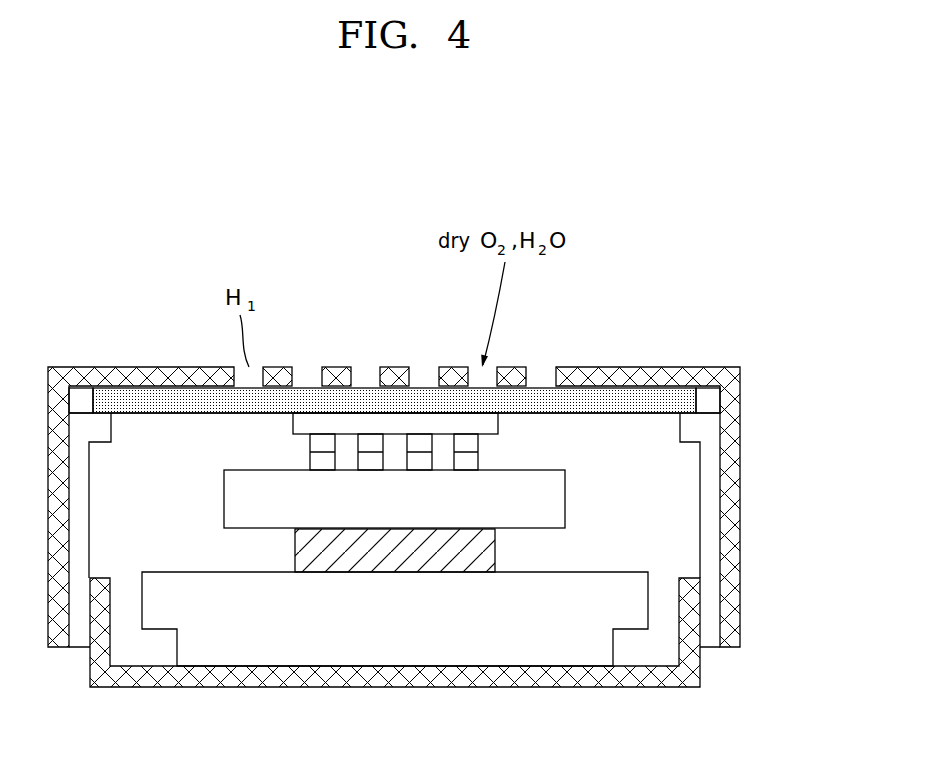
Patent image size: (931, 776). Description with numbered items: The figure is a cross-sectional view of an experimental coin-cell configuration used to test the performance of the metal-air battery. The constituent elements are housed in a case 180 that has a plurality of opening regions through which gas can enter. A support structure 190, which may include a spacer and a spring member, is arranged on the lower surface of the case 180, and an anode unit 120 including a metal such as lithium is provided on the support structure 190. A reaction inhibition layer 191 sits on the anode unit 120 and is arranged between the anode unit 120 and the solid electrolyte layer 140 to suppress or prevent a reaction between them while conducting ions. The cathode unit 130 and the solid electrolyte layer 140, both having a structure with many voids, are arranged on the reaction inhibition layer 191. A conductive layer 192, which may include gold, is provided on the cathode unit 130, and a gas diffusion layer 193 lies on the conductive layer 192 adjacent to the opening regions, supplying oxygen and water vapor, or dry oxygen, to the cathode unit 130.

The case 180 is at (175, 365).
The gas diffusion layer 193 is at (687, 403).
The conductive layer 192 is at (300, 424).
The solid electrolyte layer 140 is at (478, 461).
The cathode unit 130 is at (478, 444).
The reaction inhibition layer 191 is at (552, 501).
The anode unit 120 is at (483, 552).
The support structure 190 is at (632, 602).